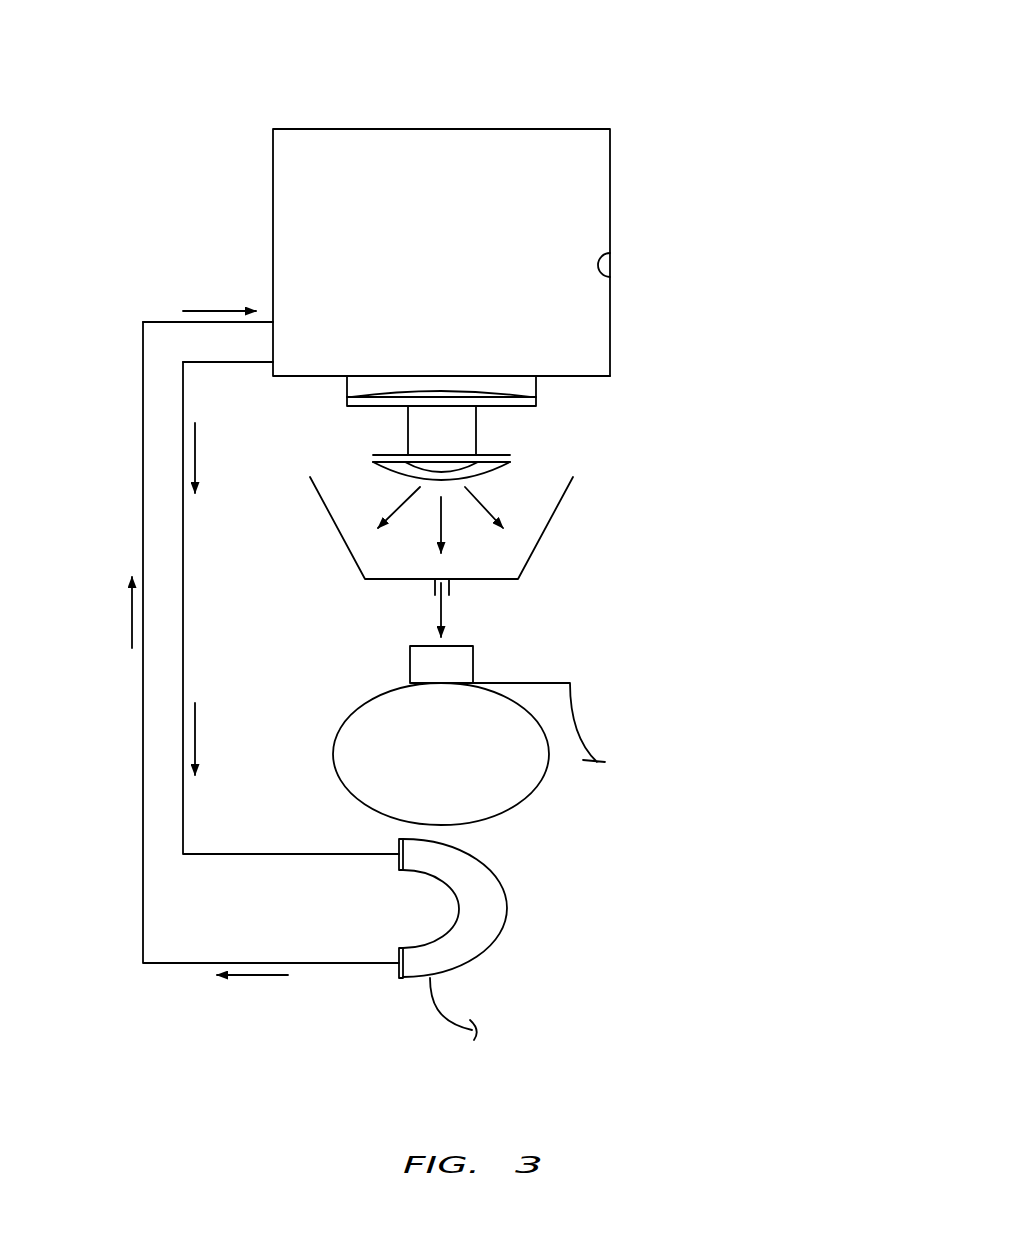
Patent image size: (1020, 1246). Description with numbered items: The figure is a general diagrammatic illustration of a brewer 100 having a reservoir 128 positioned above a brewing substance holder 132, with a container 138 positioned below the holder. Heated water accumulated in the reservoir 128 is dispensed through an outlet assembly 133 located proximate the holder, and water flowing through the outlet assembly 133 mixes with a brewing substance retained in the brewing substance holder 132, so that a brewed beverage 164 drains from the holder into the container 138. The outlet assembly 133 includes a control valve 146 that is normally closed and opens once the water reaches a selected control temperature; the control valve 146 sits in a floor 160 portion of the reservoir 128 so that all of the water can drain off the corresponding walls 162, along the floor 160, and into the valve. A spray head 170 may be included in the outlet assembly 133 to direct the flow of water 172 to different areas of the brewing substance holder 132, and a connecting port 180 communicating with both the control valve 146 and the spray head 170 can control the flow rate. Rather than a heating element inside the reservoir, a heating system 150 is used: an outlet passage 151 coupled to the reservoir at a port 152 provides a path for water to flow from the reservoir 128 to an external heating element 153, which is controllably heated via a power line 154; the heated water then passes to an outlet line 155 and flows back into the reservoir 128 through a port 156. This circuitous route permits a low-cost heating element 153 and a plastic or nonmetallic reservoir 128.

The brewer 100 is at (681, 80).
The reservoir 128 is at (632, 262).
The walls 162 is at (604, 277).
The floor 160 is at (570, 376).
The control valve 146 is at (538, 391).
The connecting port 180 is at (482, 432).
The outlet assembly 133 is at (557, 440).
The spray head 170 is at (534, 465).
The flow of water 172 is at (500, 492).
The brewing substance holder 132 is at (572, 544).
The brewed beverage 164 is at (462, 605).
The container 138 is at (604, 727).
The heating system 150 is at (530, 903).
The heating element 153 is at (477, 939).
The power line 154 is at (433, 1012).
The outlet line 155 is at (185, 963).
The outlet passage 151 is at (183, 609).
The supply line inlet 152 is at (273, 362).
The port 156 is at (273, 322).